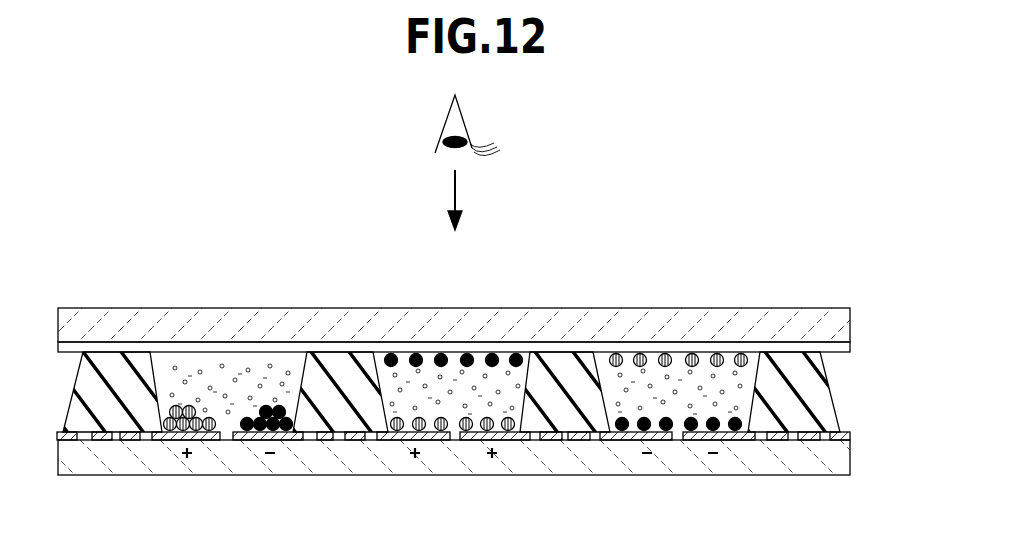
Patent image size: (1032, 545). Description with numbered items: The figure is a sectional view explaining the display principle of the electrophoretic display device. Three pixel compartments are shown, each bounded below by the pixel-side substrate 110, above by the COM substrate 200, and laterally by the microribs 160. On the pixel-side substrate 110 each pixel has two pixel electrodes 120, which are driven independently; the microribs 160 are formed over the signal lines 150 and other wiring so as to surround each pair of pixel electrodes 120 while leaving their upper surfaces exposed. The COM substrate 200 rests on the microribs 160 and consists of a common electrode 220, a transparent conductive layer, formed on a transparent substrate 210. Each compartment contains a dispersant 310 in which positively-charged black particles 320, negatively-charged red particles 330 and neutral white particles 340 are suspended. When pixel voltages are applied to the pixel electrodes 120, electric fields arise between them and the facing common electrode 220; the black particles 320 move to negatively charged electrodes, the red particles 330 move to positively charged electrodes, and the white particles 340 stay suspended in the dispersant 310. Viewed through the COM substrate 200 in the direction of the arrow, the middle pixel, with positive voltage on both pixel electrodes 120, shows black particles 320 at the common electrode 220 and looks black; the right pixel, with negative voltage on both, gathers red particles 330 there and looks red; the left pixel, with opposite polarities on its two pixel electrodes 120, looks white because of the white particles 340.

The pixel-side substrate 110 is at (818, 455).
The pixel electrodes 120 is at (445, 440).
The signal lines 150 is at (325, 440).
The microribs 160 is at (820, 395).
The COM substrate 200 is at (74, 296).
The transparent substrate 210 is at (838, 327).
The common electrode 220 is at (845, 348).
The dispersant 310 is at (238, 362).
The positively-charged black particles 320 is at (398, 356).
The negatively-charged red particles 330 is at (630, 357).
The neutral white particles 340 is at (172, 362).